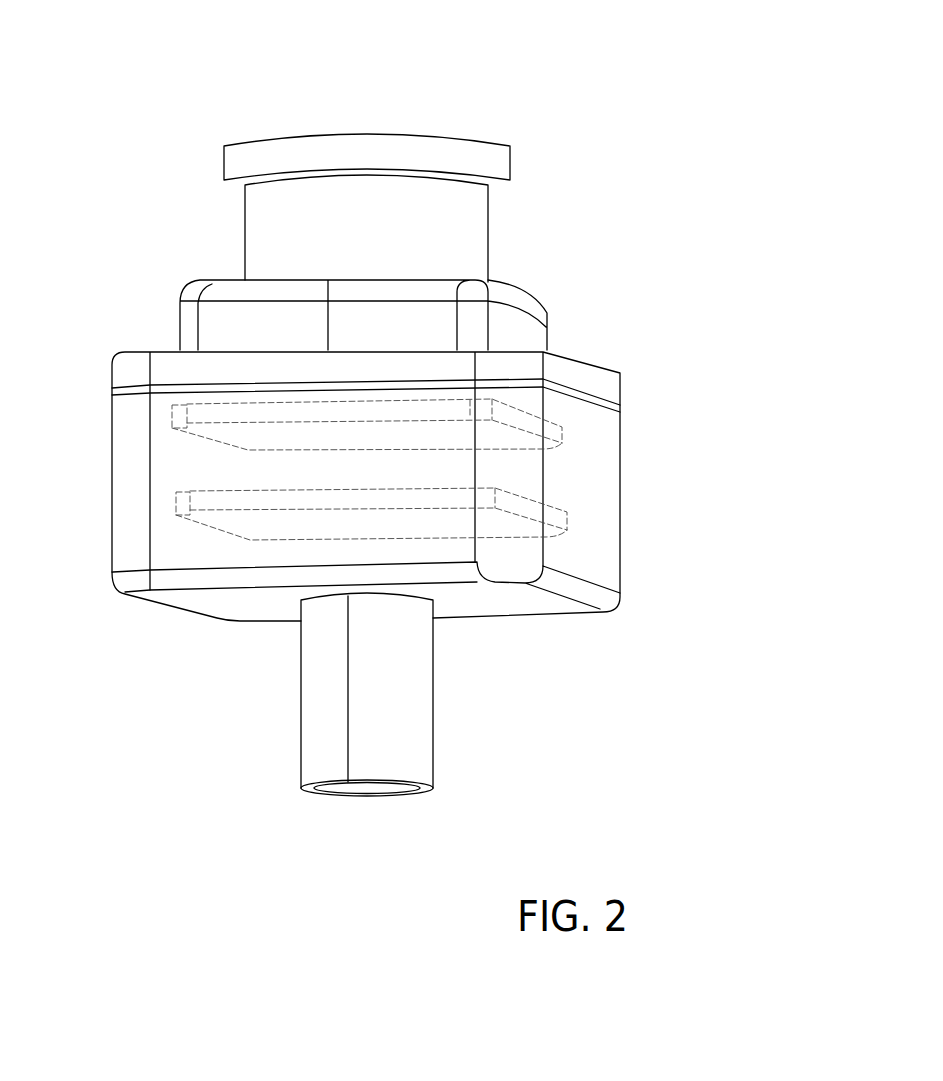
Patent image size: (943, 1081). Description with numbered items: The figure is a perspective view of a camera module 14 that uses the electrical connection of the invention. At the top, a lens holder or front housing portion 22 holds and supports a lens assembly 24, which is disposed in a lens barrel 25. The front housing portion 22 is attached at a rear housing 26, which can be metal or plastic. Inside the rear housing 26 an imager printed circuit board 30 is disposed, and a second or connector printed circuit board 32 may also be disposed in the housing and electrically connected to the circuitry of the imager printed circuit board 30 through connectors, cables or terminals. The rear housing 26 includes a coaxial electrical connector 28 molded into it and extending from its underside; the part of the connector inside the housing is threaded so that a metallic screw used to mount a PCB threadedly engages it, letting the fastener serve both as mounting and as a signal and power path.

The camera module 14 is at (655, 84).
The front housing portion 22 is at (548, 333).
The lens assembly 24 is at (413, 118).
The lens barrel 25 is at (258, 253).
The rear housing 26 is at (123, 505).
The coaxial electrical connector 28 is at (312, 722).
The imager printed circuit board 30 is at (560, 425).
The connector printed circuit board 32 is at (568, 520).